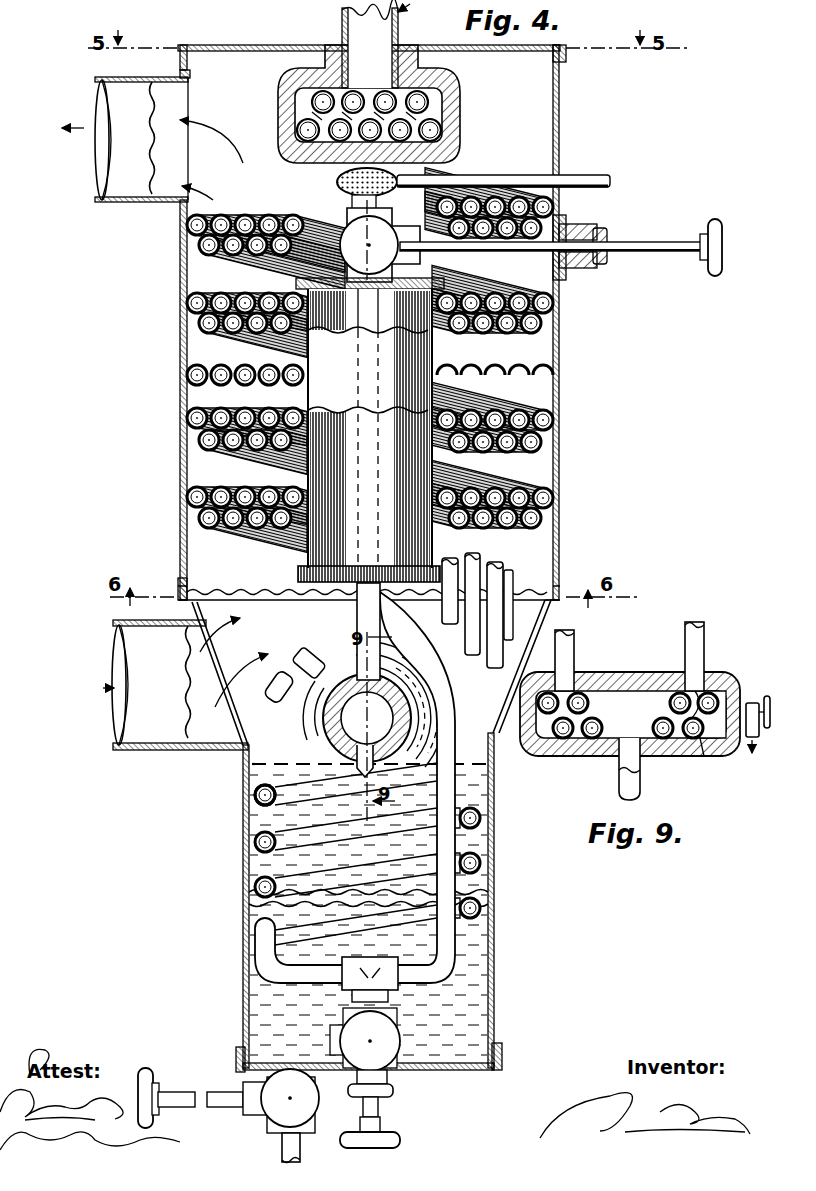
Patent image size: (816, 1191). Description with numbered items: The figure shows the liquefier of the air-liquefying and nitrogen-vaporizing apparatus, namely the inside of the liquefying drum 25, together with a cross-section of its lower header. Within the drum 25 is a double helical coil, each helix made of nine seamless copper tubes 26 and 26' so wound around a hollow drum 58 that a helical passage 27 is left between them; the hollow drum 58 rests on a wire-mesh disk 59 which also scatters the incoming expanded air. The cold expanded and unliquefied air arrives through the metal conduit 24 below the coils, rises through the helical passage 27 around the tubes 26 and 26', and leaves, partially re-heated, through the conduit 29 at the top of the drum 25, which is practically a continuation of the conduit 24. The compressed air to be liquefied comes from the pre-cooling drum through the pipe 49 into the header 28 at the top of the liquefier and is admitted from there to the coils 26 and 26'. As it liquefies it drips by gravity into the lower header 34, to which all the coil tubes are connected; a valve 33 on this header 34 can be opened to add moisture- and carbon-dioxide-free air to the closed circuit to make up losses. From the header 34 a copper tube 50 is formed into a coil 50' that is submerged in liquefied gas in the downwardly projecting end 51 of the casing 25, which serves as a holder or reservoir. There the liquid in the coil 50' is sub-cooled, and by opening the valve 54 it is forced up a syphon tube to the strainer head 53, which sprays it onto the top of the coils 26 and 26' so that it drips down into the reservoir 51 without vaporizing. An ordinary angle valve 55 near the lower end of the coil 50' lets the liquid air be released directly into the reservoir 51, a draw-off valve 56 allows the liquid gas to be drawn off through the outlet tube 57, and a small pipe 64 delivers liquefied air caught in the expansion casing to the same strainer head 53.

In FIG. 4, the metal conduit 24 is at (165, 705).
In FIG. 4, the liquefying drum 25 is at (180, 462).
In FIG. 4, the seamless copper tubes 26 is at (216, 384).
In FIG. 4, the seamless copper tubes 26' is at (536, 348).
In FIG. 4, the helical passage 27 is at (500, 347).
In FIG. 4, the header 28 is at (280, 92).
In FIG. 4, the conduit 29 is at (125, 165).
In FIG. 9, the valve 33 is at (743, 727).
In FIG. 4, the header 34 is at (262, 792).
In FIG. 9, the header 34 is at (585, 757).
In FIG. 4, the pipe 49 is at (362, 22).
In FIG. 4, the copper tube 50 is at (399, 793).
In FIG. 4, the coil 50' is at (303, 901).
In FIG. 4, the downwardly projecting end 51 is at (490, 830).
In FIG. 4, the strainer head 53 is at (336, 184).
In FIG. 4, the valve 54 is at (362, 243).
In FIG. 4, the angle valve 55 is at (382, 1046).
In FIG. 4, the draw-off valve 56 is at (288, 1097).
In FIG. 4, the outlet tube 57 is at (300, 1145).
In FIG. 4, the hollow drum 58 is at (383, 487).
In FIG. 4, the wire-mesh disk 59 is at (210, 602).
In FIG. 4, the pipe 64 is at (580, 189).